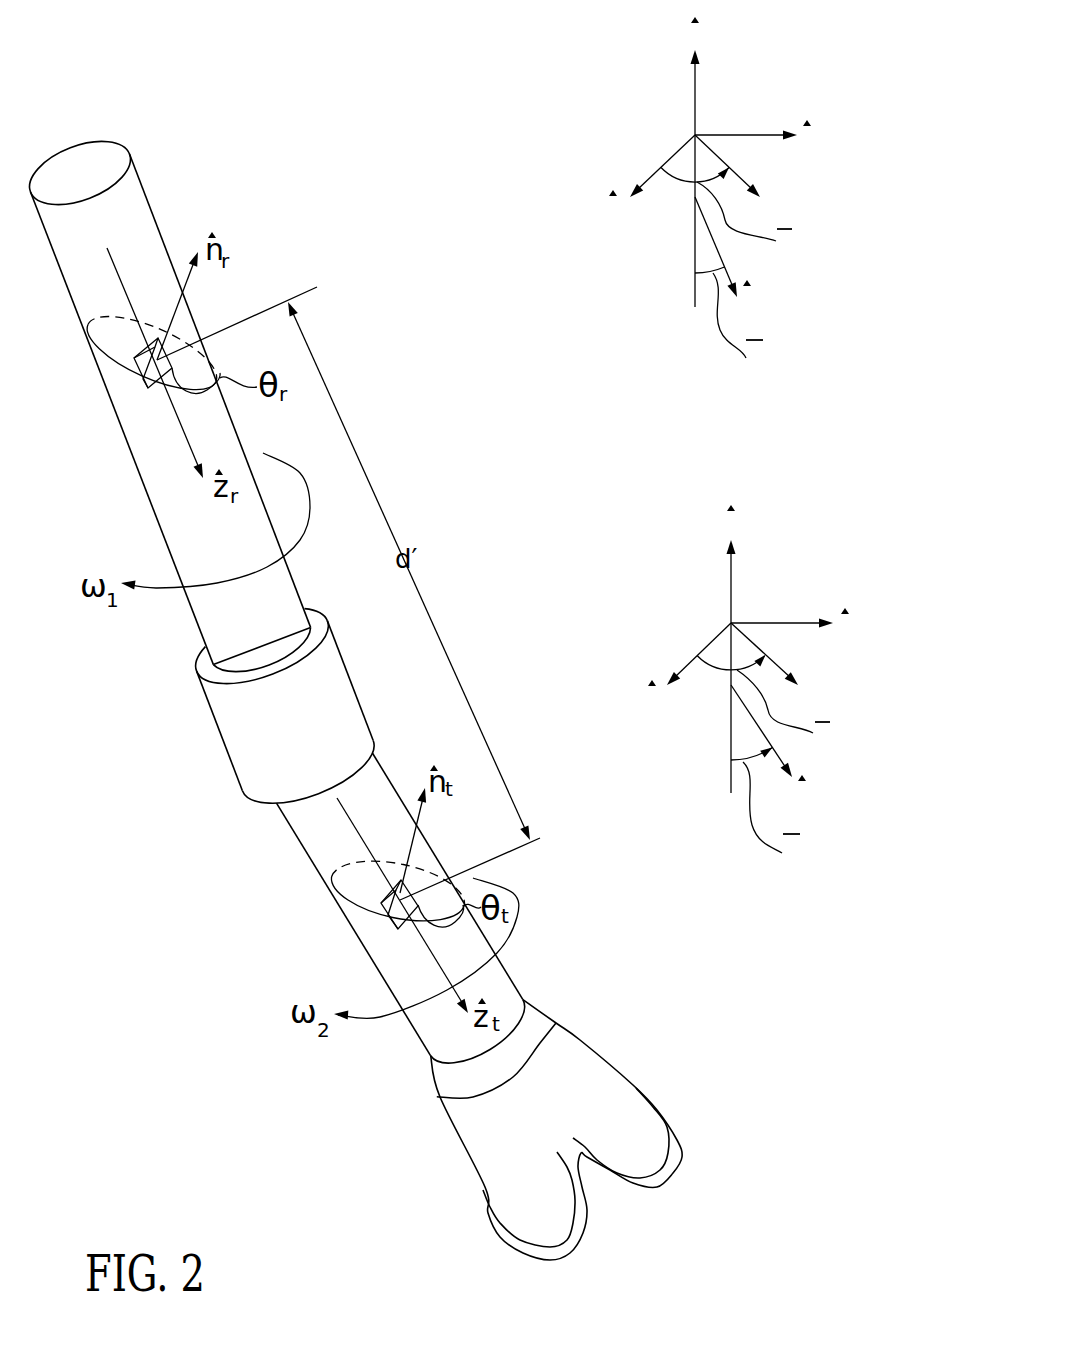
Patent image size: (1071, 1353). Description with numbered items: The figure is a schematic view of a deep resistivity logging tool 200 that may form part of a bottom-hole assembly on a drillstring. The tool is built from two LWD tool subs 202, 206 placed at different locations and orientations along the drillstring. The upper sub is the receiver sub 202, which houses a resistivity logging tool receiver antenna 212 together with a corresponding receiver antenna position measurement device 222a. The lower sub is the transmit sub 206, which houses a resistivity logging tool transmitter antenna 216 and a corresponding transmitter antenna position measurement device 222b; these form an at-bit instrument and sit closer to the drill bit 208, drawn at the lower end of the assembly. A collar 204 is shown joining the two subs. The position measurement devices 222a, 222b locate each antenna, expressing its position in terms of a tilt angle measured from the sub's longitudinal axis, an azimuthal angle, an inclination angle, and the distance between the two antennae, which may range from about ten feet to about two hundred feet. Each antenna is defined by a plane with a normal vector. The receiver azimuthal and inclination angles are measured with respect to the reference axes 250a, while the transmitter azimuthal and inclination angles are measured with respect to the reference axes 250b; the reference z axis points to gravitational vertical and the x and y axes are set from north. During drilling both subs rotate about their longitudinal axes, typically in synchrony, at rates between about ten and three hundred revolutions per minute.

The deep resistivity logging tool 200 is at (352, 249).
The LWD tool sub 202 is at (138, 170).
The coupling collar 204 is at (217, 727).
The LWD tool sub 206 is at (385, 776).
The drill bit 208 is at (600, 1055).
The resistivity logging tool receiver antenna 212 is at (125, 376).
The resistivity logging tool transmitter antenna 216 is at (370, 917).
The receiver antenna position measurement device 222a is at (143, 386).
The transmitter antenna position measurement device 222b is at (380, 901).
The reference axes 250a is at (636, 90).
The reference axes 250b is at (818, 966).